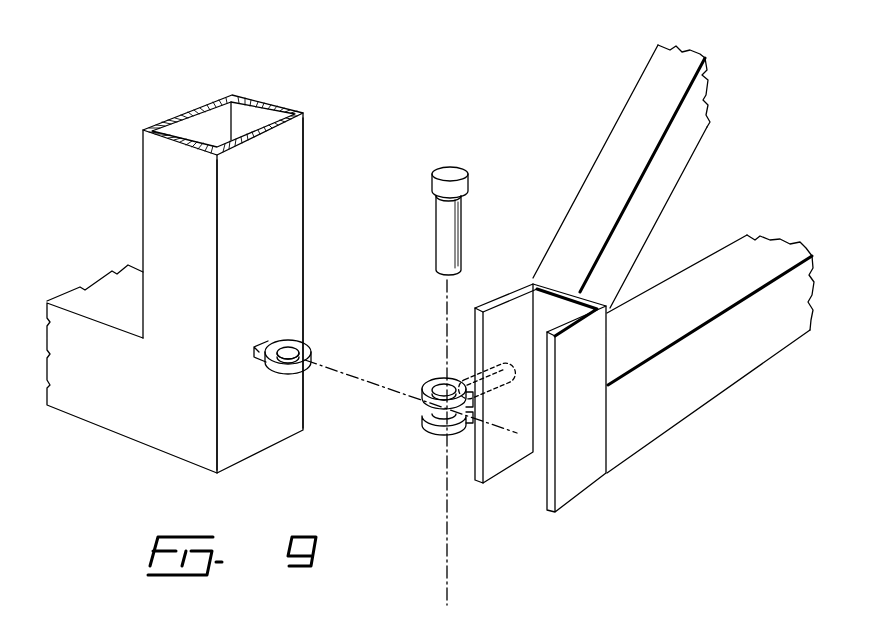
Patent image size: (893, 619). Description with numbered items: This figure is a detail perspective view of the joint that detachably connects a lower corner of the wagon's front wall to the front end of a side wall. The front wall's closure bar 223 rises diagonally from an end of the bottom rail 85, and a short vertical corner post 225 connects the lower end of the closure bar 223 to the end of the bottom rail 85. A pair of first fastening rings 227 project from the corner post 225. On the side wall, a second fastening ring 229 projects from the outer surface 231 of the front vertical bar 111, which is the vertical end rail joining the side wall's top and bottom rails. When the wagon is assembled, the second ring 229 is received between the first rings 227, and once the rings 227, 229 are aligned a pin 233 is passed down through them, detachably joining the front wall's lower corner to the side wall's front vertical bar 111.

The vertical end rail 111 is at (303, 150).
The outer surface 231 is at (276, 222).
The second fastening ring 229 is at (305, 343).
The pin 233 is at (438, 247).
The first fastening rings 227 is at (424, 420).
The corner post 225 is at (588, 486).
The closure bar 223 is at (604, 146).
The bottom rail 85 is at (743, 377).